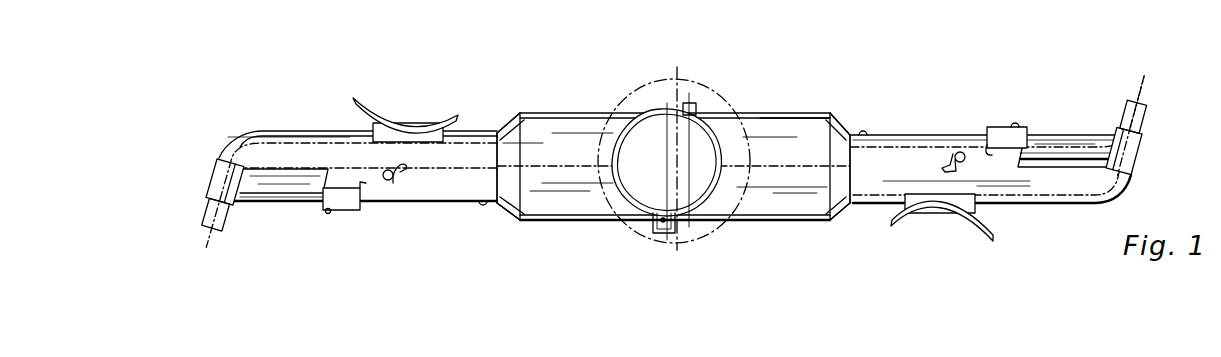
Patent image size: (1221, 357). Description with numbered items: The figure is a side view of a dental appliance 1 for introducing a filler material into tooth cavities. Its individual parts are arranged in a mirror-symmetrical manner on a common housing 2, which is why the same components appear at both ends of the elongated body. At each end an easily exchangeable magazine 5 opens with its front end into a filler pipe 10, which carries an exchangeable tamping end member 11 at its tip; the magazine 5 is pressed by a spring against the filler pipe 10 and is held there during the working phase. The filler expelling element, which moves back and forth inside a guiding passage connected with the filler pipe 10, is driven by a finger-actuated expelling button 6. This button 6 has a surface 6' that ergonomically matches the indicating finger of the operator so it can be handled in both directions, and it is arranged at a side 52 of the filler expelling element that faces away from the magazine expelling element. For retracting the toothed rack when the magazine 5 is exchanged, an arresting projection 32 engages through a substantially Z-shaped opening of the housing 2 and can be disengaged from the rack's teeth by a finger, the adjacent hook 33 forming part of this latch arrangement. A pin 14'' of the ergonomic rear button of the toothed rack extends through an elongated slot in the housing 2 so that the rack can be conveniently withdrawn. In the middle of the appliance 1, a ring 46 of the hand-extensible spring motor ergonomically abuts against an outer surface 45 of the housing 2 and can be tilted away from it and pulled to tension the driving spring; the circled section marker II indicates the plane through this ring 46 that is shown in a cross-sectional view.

The dental appliance 1 is at (509, 240).
The housing 2 is at (783, 224).
The magazine 5 is at (276, 194).
The expelling button 6 is at (675, 159).
The surface 6' is at (405, 87).
The filler pipe 10 is at (215, 177).
The tamping end member 11 is at (210, 217).
The pin 14'' is at (655, 164).
The arresting projection 32 is at (385, 180).
The hook 33 is at (404, 171).
The outer surface 45 is at (790, 118).
The ring 46 is at (626, 203).
The side 52 is at (479, 131).
The section line II is at (707, 90).